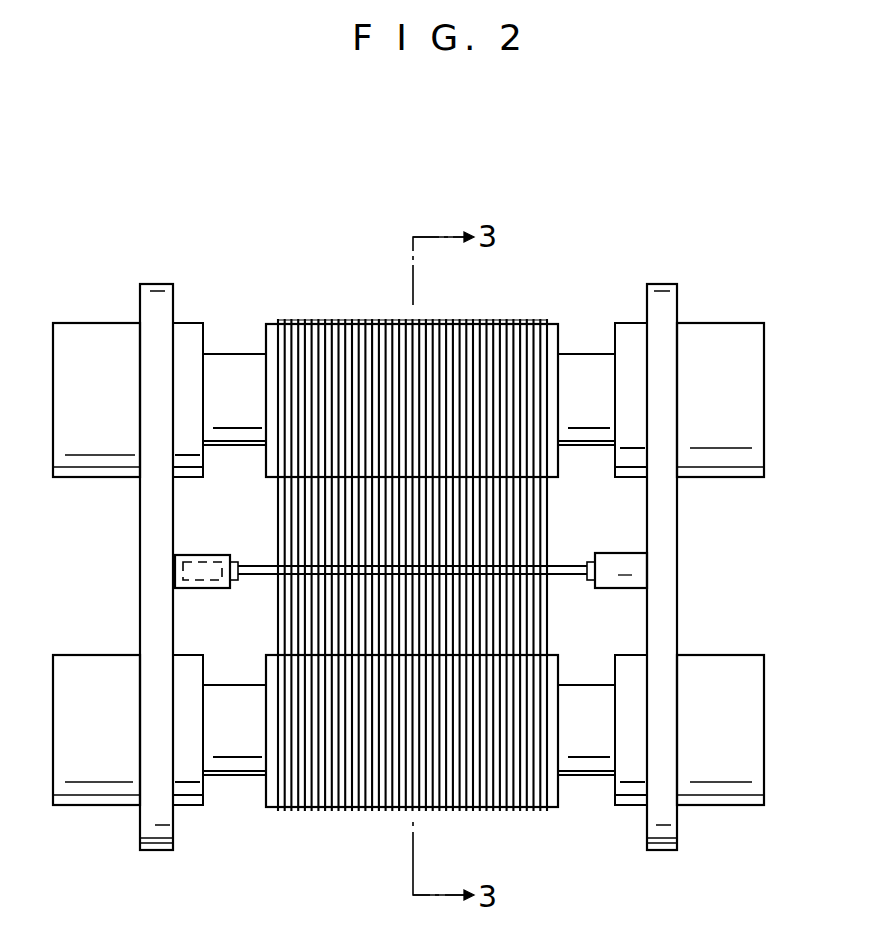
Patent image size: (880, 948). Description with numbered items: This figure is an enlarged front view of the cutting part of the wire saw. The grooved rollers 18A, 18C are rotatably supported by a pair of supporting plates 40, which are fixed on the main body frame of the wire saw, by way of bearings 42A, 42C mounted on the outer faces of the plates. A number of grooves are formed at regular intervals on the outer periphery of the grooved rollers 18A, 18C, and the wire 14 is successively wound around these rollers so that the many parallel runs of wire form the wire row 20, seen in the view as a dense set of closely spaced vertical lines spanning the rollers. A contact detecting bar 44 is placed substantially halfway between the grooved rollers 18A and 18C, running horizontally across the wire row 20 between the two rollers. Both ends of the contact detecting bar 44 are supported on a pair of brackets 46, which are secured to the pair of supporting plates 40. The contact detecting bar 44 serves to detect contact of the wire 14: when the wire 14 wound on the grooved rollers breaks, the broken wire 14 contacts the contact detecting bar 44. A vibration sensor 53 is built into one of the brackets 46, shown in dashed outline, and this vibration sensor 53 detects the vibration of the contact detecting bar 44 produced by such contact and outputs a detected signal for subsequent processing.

The wire 14 is at (548, 515).
The grooved roller 18A is at (552, 326).
The grooved roller 18C is at (270, 806).
The wire row 20 is at (363, 306).
The supporting plate 40 is at (158, 290).
The bearing 42A is at (95, 332).
The bearing 42C is at (97, 803).
The contact detecting bar 44 is at (485, 576).
The bracket 46 is at (208, 590).
The vibration sensor 53 is at (212, 553).